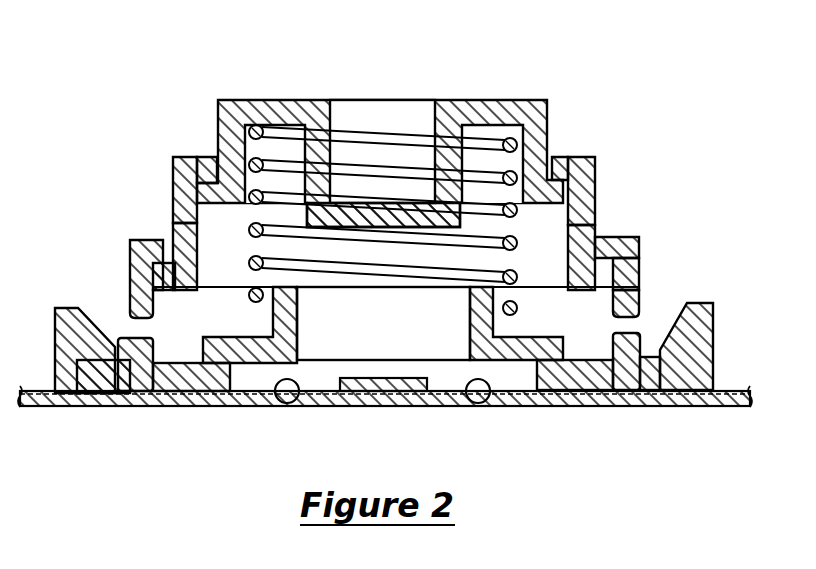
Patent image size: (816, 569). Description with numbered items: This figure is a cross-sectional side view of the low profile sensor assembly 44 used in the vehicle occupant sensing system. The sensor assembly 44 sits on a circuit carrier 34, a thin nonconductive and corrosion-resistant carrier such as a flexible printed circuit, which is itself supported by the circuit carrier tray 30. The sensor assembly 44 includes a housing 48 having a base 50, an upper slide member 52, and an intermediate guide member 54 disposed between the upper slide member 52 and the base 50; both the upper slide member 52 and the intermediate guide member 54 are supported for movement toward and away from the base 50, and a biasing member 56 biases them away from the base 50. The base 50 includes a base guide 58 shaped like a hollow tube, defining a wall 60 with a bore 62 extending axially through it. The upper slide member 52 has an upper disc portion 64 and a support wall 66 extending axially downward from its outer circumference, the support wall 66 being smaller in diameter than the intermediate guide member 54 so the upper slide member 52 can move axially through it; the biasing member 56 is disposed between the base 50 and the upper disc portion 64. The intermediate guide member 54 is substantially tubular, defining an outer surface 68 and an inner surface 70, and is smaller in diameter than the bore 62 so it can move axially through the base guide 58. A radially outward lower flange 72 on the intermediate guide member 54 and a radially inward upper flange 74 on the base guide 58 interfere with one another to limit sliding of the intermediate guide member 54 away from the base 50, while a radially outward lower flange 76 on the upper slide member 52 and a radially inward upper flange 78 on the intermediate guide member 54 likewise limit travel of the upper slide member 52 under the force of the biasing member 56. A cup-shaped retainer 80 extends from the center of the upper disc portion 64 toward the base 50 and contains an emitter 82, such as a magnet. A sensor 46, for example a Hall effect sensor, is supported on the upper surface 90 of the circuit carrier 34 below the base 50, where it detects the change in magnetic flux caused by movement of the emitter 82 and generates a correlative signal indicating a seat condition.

The circuit carrier tray 30 is at (612, 404).
The circuit carrier 34 is at (483, 402).
The low profile sensor assembly 44 is at (591, 110).
The sensor 46 is at (367, 394).
The housing 48 is at (603, 222).
The base 50 is at (652, 276).
The upper slide member 52 is at (492, 105).
The intermediate guide member 54 is at (580, 176).
The biasing member 56 is at (245, 218).
The base guide 58 is at (640, 288).
The wall 60 is at (130, 265).
The bore 62 is at (148, 288).
The upper disc portion 64 is at (268, 112).
The support wall 66 is at (220, 135).
The outer surface 68 is at (186, 176).
The inner surface 70 is at (173, 225).
The lower flange 72 is at (640, 240).
The upper flange 74 is at (648, 276).
The lower flange 76 is at (190, 210).
The upper flange 78 is at (205, 165).
The retainer 80 is at (353, 125).
The emitter 82 is at (393, 120).
The upper surface 90 is at (286, 404).